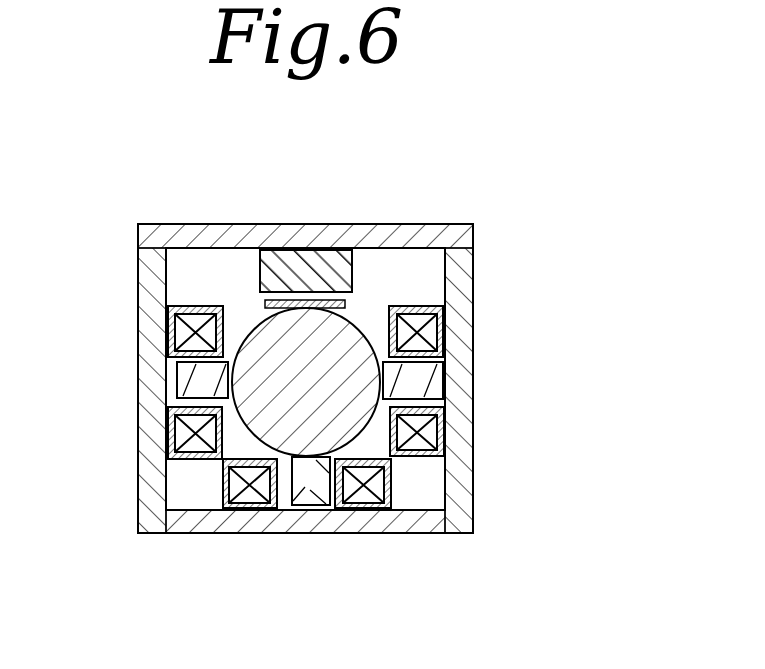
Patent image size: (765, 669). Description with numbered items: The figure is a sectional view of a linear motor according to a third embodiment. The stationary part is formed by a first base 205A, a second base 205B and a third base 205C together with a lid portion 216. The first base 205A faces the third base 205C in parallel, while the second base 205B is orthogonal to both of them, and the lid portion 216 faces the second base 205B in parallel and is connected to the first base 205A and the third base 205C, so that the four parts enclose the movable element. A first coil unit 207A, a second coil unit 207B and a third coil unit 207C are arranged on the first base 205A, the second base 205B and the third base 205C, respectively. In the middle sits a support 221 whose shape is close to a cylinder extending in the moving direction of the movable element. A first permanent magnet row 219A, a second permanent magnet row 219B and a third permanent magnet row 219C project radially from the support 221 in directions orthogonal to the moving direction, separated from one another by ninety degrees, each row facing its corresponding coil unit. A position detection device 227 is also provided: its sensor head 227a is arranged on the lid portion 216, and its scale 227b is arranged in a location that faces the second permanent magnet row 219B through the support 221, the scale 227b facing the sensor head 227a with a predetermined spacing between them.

The lid portion 216 is at (460, 226).
The support 221 is at (345, 328).
The position detection device 227 is at (345, 208).
The sensor head 227a is at (298, 273).
The scale 227b is at (345, 306).
The first base 205A is at (128, 382).
The first coil unit 207A is at (172, 335).
The first permanent magnet row 219A is at (182, 392).
The second base 205B is at (290, 546).
The second coil unit 207B is at (248, 500).
The second permanent magnet row 219B is at (315, 505).
The third base 205C is at (486, 381).
The third coil unit 207C is at (427, 433).
The third permanent magnet row 219C is at (425, 383).